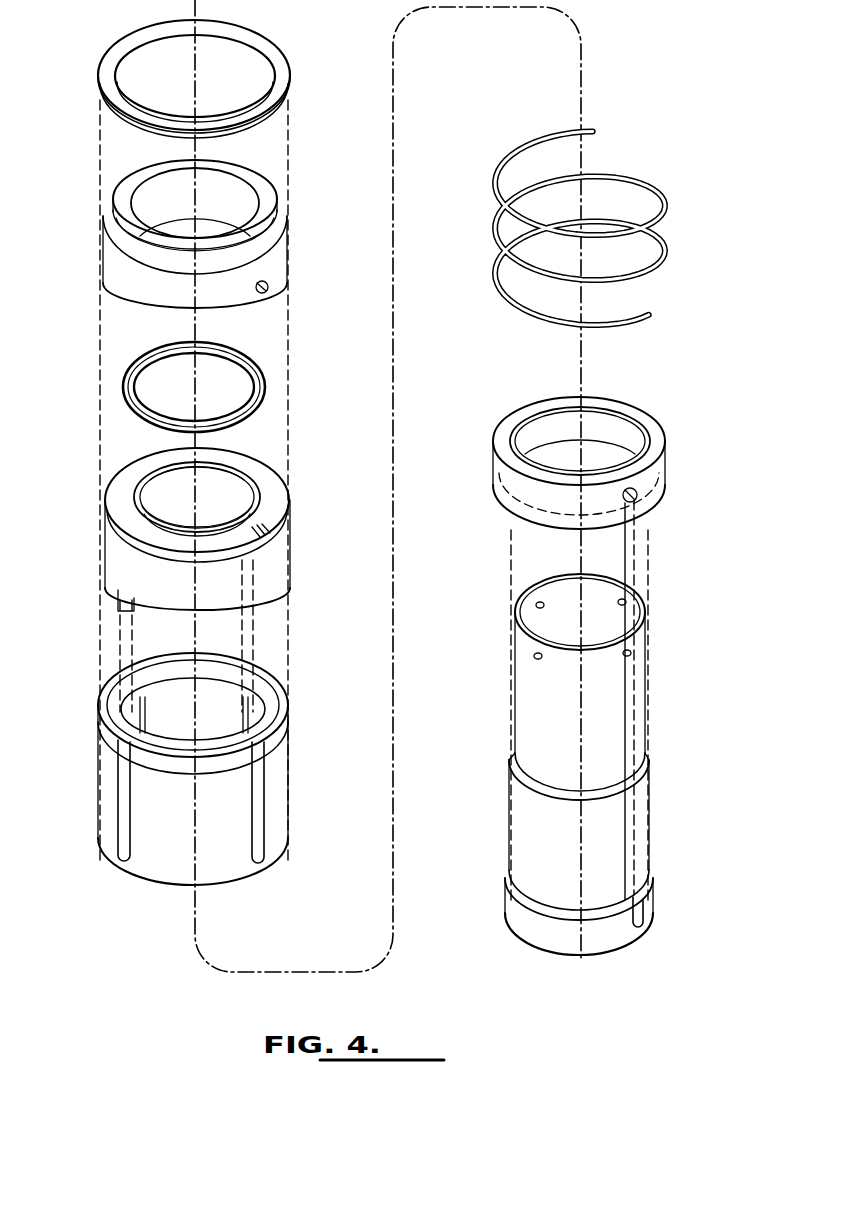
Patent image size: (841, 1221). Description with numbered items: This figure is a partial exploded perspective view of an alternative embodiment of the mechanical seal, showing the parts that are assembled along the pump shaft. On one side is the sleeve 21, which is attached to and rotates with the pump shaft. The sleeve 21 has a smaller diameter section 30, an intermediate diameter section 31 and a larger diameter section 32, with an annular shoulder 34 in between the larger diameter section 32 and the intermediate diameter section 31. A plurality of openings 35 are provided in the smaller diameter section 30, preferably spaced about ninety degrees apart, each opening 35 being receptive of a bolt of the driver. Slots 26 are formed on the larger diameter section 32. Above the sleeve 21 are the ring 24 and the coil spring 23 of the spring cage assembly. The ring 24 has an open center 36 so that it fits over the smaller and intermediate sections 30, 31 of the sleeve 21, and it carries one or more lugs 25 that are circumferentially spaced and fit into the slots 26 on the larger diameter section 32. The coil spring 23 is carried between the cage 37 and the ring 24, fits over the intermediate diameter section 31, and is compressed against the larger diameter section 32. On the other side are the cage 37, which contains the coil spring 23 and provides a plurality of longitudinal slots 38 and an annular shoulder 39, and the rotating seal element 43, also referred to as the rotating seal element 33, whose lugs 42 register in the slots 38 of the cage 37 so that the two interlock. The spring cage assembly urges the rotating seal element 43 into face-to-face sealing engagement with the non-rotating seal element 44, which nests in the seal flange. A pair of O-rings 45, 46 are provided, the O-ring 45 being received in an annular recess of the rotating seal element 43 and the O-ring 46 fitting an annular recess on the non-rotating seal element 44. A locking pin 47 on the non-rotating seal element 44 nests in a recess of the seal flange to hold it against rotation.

The sleeve 21 is at (584, 856).
The coil spring 23 is at (645, 178).
The ring 24 is at (591, 453).
The lugs 25 is at (640, 497).
The slots 26 is at (643, 907).
The smaller diameter section 30 is at (590, 701).
The intermediate diameter section 31 is at (525, 832).
The larger diameter section 32 is at (572, 922).
The rotating seal element 33 is at (585, 787).
The annular shoulder 34 is at (600, 915).
The openings 35 is at (619, 601).
The open center 36 is at (563, 460).
The cage 37 is at (199, 769).
The longitudinal slots 38 is at (268, 777).
The annular shoulder 39 is at (282, 720).
The lugs 42 is at (122, 600).
The rotating seal element 43 is at (284, 512).
The non-rotating seal element 44 is at (115, 263).
The O-ring 45 is at (130, 405).
The O-ring 46 is at (272, 52).
The locking pin 47 is at (258, 297).